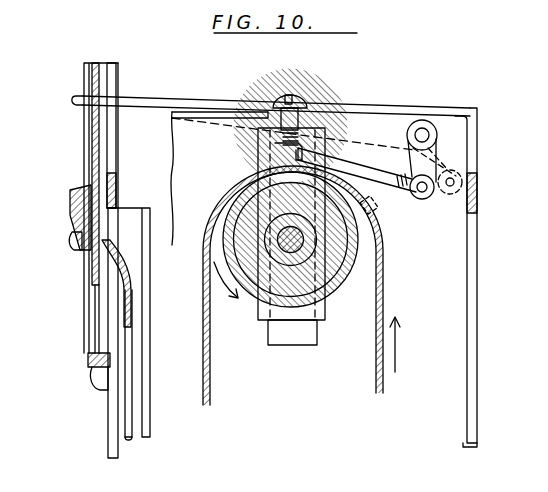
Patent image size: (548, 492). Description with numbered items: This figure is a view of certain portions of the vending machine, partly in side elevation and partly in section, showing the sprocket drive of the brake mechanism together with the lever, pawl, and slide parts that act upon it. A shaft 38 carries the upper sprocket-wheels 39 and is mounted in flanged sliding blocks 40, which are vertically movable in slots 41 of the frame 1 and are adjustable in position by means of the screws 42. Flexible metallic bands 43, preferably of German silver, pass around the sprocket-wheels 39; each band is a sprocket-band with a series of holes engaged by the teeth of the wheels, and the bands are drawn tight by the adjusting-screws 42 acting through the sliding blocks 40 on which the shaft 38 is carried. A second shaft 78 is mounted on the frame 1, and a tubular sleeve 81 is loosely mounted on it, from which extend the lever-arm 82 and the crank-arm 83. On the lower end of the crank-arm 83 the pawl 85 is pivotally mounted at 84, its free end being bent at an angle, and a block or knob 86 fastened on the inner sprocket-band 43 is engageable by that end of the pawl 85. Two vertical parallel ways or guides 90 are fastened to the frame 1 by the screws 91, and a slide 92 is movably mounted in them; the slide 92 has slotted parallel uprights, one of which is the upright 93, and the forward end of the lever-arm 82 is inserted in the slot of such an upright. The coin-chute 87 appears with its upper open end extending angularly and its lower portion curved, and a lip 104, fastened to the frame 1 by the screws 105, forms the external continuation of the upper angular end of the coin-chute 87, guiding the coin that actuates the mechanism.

The frame 1 is at (477, 268).
The shaft 38 is at (291, 228).
The upper sprocket-wheel 39 is at (336, 290).
The flanged sliding block 40 is at (324, 321).
The slot 41 is at (297, 340).
The adjusting-screw 42 is at (302, 100).
The flexible metallic band 43 is at (376, 380).
The shaft 78 is at (437, 135).
The tubular sleeve 81 is at (436, 119).
The lever-arm 82 is at (271, 96).
The crank-arm 83 is at (427, 155).
The pivot 84 is at (425, 199).
The pawl 85 is at (381, 186).
The block or knob 86 is at (304, 158).
The coin-chute 87 is at (150, 373).
The vertical way or guide 90 is at (118, 148).
The screw 91 is at (92, 378).
The slide 92 is at (95, 180).
The upright 93 is at (84, 137).
The lip 104 is at (55, 217).
The screw 105 is at (72, 243).